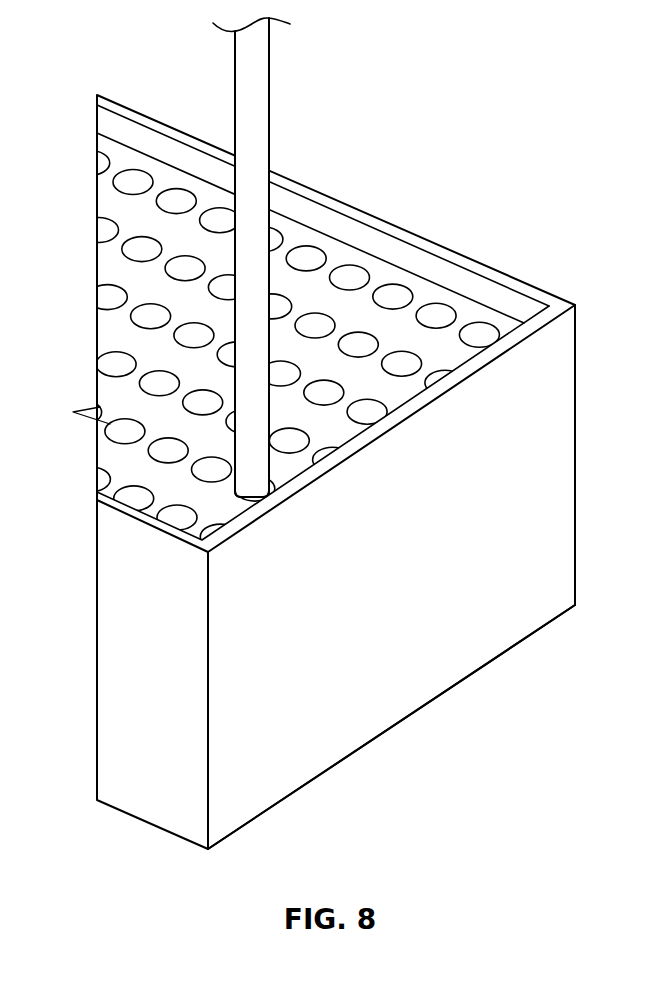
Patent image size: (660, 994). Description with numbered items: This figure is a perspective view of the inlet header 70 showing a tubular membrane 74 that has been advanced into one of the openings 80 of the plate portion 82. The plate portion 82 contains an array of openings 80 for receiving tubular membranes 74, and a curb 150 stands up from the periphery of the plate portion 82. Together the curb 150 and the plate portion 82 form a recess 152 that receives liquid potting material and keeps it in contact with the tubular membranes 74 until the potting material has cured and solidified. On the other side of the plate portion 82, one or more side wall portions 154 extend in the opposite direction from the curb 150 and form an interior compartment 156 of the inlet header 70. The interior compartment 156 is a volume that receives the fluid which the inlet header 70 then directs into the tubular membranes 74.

The inlet header 70 is at (577, 470).
The tubular membrane 74 is at (270, 108).
The opening 80 is at (243, 497).
The plate portion 82 is at (380, 272).
The curb 150 is at (448, 272).
The recess 152 is at (460, 327).
The side wall portion 154 is at (557, 532).
The interior compartment 156 is at (516, 661).